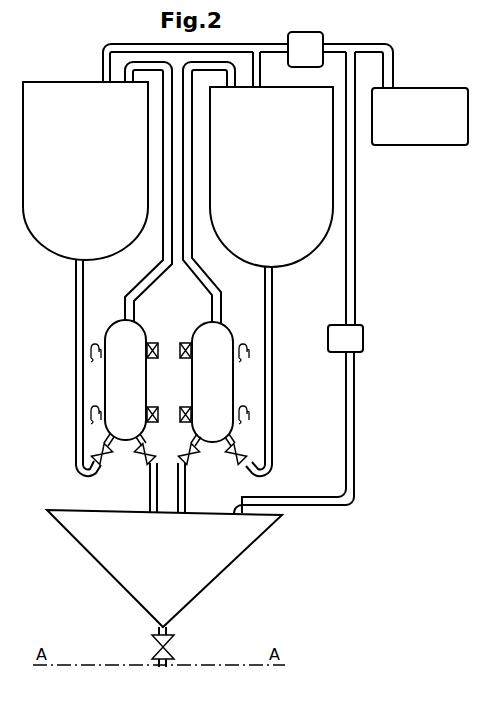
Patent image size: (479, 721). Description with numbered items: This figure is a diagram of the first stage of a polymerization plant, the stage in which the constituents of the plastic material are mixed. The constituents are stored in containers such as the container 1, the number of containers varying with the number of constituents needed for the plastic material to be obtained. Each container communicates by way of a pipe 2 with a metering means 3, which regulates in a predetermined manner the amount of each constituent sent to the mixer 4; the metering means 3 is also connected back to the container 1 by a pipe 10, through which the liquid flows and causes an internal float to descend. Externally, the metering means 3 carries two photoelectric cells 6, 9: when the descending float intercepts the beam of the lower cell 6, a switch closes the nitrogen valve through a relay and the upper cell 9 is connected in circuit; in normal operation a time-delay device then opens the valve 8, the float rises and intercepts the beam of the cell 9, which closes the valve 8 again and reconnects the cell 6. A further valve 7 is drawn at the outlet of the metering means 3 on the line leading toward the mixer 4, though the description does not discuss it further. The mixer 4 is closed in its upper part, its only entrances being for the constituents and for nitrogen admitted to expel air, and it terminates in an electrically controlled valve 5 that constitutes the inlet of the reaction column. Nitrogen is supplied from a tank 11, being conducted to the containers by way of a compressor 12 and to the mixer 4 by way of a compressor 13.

The container 1 is at (85, 171).
The pipe 2 is at (75, 378).
The metering means 3 is at (118, 380).
The mixer 4 is at (164, 568).
The electrically controlled valve 5 is at (172, 648).
The photoelectric cell 6 is at (153, 422).
The discharge valve 7 is at (145, 470).
The valve 8 is at (106, 466).
The photoelectric cell 9 is at (152, 343).
The pipe 10 is at (146, 283).
The tank 11 is at (420, 116).
The compressor 12 is at (248, 60).
The compressor 13 is at (298, 282).